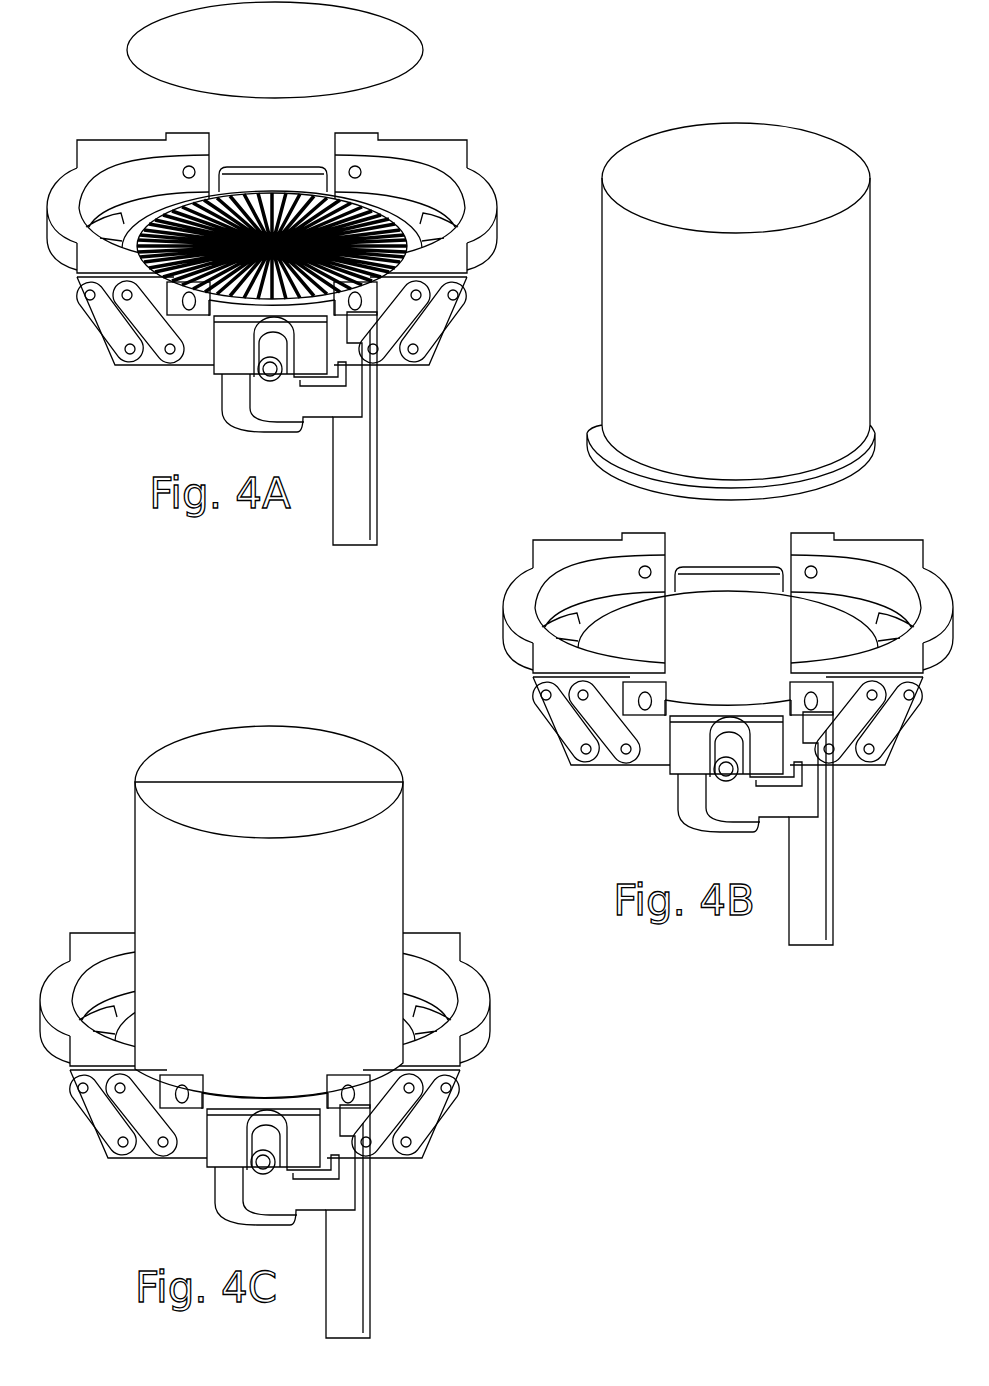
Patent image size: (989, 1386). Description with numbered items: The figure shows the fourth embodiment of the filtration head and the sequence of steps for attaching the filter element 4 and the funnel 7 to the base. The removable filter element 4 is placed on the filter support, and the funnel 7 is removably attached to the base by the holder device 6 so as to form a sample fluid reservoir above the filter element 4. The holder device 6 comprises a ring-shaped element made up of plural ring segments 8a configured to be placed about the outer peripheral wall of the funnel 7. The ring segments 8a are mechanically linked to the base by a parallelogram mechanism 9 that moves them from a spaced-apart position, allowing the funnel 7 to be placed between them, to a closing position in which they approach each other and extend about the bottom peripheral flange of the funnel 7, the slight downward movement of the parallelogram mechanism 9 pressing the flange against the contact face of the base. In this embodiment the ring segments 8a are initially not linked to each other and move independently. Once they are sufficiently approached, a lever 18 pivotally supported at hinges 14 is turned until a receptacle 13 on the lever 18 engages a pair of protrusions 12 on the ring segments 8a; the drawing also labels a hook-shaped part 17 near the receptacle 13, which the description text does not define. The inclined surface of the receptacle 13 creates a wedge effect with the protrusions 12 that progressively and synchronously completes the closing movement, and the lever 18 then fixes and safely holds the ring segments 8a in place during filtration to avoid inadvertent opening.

In FIG. 4A, the filter element 4 is at (345, 38).
In FIG. 4B, the holder device 6 is at (686, 709).
In FIG. 4B, the funnel 7 is at (723, 310).
In FIG. 4A, the ring segments 8a is at (113, 150).
In FIG. 4A, the parallelogram mechanism 9 is at (145, 328).
In FIG. 4B, the protrusions 12 is at (672, 594).
In FIG. 4A, the receptacle 13 is at (317, 360).
In FIG. 4A, the hinges 14 is at (263, 375).
In FIG. 4A, the hook 17 is at (335, 355).
In FIG. 4A, the lever 18 is at (347, 452).